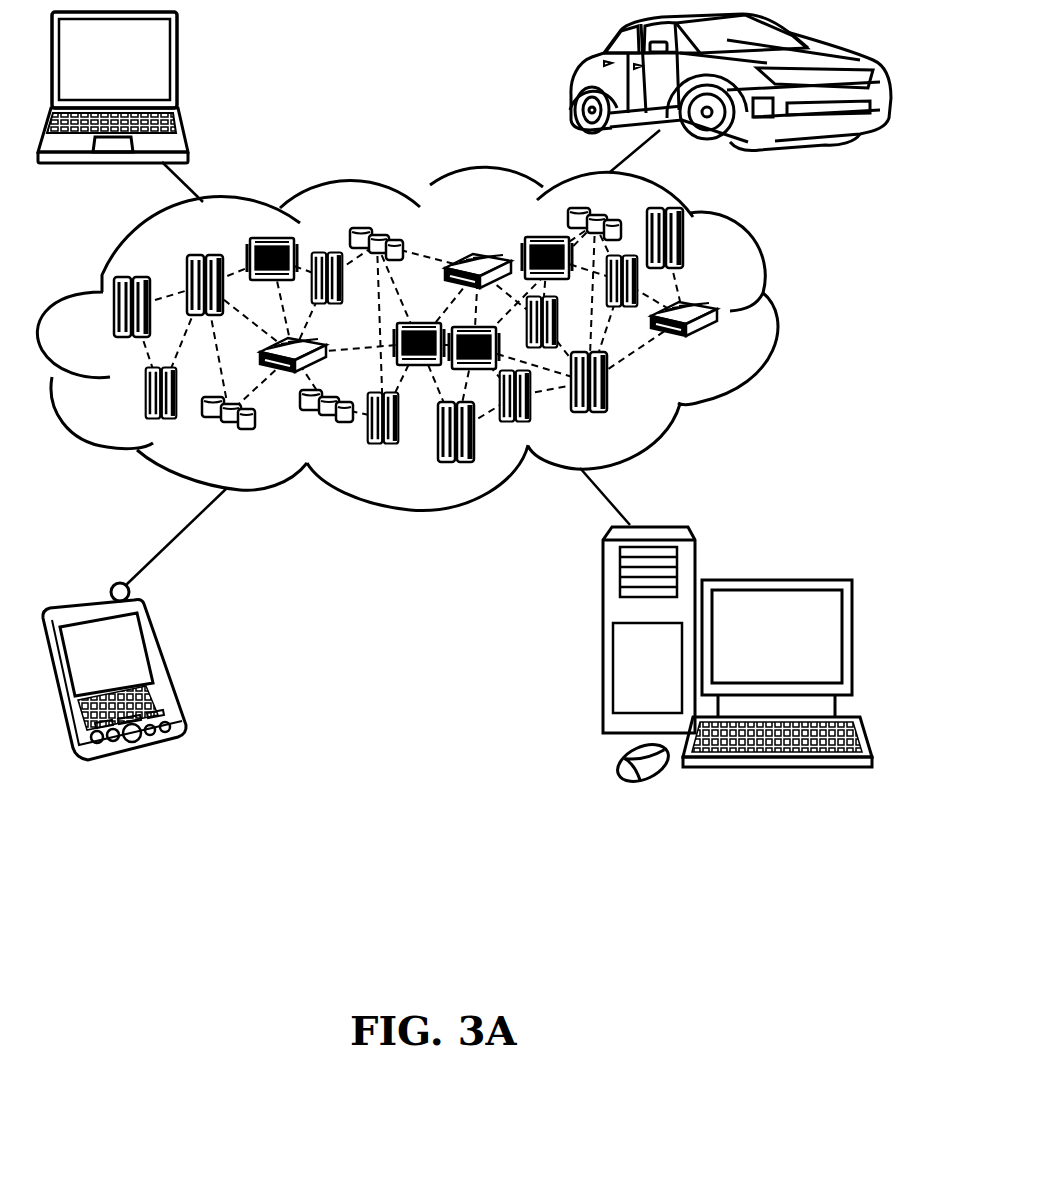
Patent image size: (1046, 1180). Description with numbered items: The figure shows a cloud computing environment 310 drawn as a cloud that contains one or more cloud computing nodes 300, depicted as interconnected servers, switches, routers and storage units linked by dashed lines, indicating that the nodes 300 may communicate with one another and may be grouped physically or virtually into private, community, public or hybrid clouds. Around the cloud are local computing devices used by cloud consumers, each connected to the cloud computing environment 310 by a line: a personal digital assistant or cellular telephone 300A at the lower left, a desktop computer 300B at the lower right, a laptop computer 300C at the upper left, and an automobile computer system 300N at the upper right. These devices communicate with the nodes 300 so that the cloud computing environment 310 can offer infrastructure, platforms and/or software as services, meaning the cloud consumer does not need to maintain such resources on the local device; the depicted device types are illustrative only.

The cloud computing nodes 300 is at (464, 400).
The cloud computing environment 310 is at (773, 317).
The personal digital assistant (PDA) or cellular telephone 300A is at (167, 662).
The desktop computer 300B is at (772, 580).
The laptop computer 300C is at (177, 65).
The automobile computer system 300N is at (575, 79).